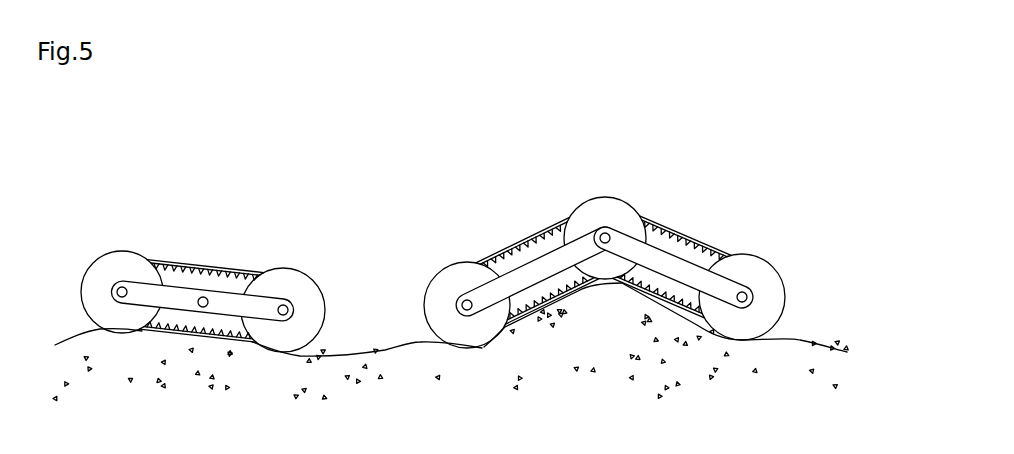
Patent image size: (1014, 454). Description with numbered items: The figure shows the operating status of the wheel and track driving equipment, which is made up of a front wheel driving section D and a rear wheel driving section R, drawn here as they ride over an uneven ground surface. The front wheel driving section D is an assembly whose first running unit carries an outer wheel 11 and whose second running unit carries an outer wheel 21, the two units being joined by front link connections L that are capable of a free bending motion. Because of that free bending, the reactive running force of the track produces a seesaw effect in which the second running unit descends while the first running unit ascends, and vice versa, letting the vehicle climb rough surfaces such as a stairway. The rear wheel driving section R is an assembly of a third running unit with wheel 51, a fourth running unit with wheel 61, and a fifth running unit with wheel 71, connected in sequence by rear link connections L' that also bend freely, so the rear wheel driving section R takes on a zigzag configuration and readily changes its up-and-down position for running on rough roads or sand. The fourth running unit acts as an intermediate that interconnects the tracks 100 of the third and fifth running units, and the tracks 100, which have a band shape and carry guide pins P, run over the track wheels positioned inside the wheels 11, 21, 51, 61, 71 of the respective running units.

The wheel 11 is at (101, 268).
The second wheel 21 is at (296, 274).
The wheel 51 is at (432, 285).
The wheel 61 is at (601, 200).
The wheel 71 is at (753, 258).
The track 100 is at (182, 259).
The front link connections L is at (202, 246).
The rear link connections L' is at (604, 229).
The front wheel driving section D is at (207, 205).
The rear wheel driving section R is at (625, 165).
The guide pins P is at (186, 330).